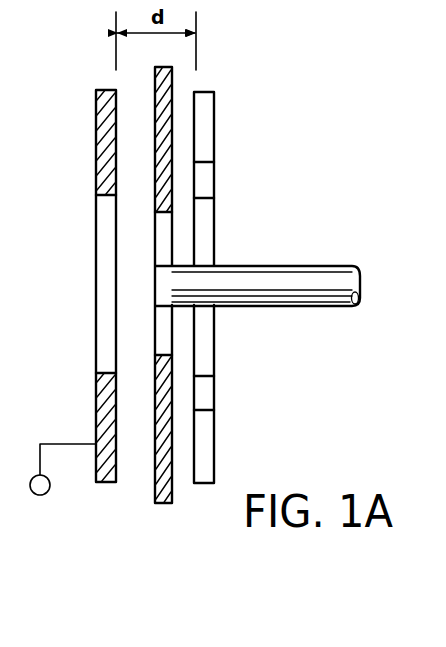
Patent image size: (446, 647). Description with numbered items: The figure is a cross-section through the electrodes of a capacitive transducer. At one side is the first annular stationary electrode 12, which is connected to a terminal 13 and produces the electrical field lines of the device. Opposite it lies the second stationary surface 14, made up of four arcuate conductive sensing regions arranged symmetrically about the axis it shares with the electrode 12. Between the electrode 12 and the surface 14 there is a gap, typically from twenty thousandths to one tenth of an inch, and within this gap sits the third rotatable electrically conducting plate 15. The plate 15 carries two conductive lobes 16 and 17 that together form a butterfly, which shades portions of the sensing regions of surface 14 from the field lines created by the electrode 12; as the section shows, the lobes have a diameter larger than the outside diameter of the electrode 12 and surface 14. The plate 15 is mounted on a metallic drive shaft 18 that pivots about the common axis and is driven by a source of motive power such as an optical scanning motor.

The first annular stationary electrode 12 is at (98, 113).
The terminal 13 is at (39, 495).
The second stationary surface 14 is at (214, 126).
The third rotatable electrically conducting plate 15 is at (132, 493).
The conductive lobe 16 is at (165, 67).
The conductive lobe 17 is at (158, 503).
The metallic drive shaft 18 is at (265, 266).